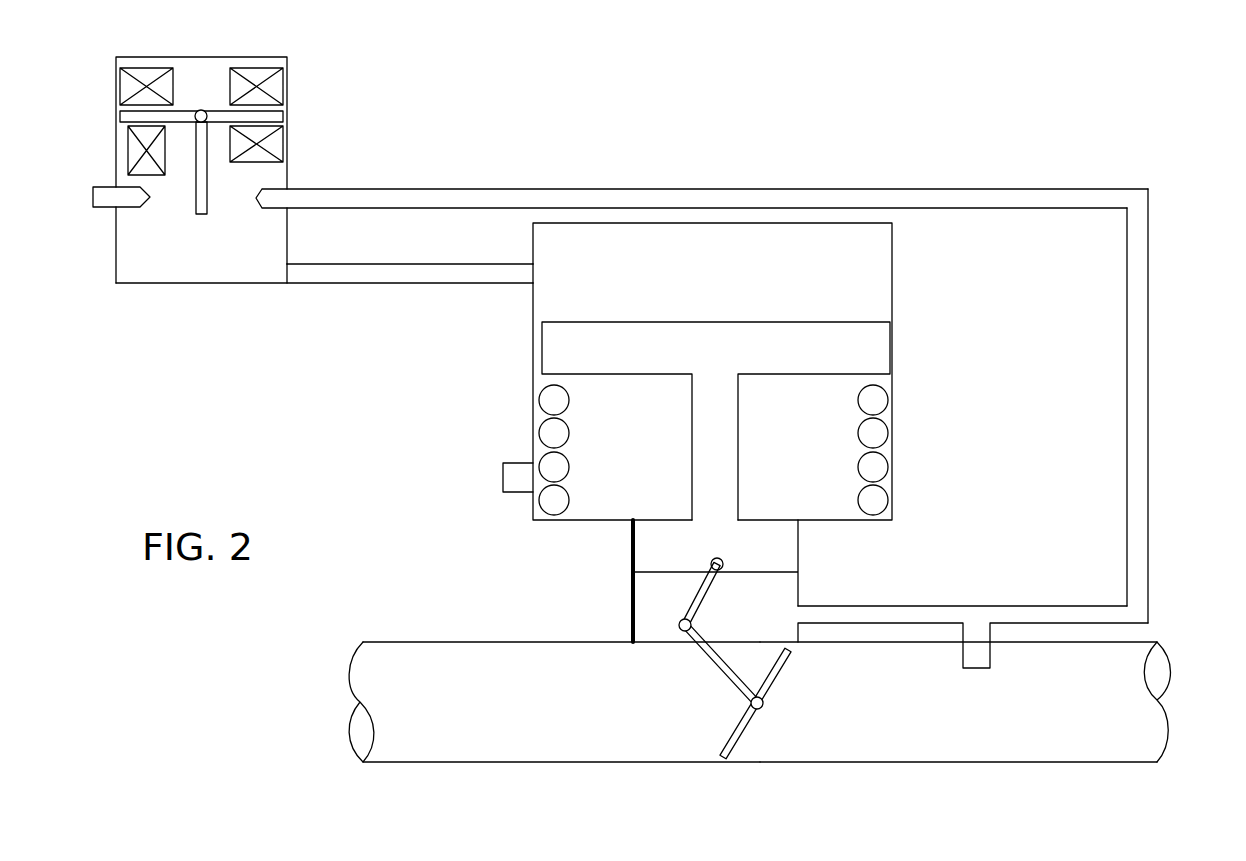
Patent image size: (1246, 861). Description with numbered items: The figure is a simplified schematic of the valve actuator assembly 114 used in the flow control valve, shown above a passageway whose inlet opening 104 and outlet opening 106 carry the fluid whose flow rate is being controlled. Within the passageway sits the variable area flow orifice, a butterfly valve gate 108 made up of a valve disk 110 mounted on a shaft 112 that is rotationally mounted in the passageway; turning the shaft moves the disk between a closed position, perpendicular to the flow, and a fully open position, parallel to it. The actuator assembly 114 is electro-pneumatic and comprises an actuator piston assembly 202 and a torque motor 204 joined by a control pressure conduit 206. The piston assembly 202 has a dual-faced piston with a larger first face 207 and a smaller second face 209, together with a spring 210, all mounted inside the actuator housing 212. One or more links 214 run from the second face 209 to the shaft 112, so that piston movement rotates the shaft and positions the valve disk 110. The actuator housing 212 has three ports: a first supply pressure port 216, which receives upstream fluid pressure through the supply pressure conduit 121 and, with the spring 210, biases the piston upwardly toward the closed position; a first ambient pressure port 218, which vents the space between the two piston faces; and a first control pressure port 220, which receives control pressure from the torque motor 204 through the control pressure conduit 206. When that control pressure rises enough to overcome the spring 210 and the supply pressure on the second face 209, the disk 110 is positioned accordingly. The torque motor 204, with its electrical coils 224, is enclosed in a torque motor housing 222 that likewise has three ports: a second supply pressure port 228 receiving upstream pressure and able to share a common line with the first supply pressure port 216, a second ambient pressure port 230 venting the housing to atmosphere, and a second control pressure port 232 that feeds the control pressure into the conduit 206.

The inlet opening 104 is at (1170, 665).
The outlet opening 106 is at (348, 667).
The butterfly valve gate 108 is at (724, 772).
The valve disk 110 is at (785, 667).
The shaft 112 is at (753, 703).
The valve actuator assembly 114 is at (820, 155).
The supply pressure conduit 121 is at (1137, 400).
The actuator piston assembly 202 is at (497, 479).
The torque motor 204 is at (332, 91).
The control pressure conduit 206 is at (383, 275).
The first face 207 is at (660, 322).
The second face 209 is at (735, 573).
The spring 210 is at (880, 433).
The actuator housing 212 is at (890, 277).
The links 214 is at (695, 642).
The first supply pressure port 216 is at (820, 615).
The first ambient pressure port 218 is at (532, 462).
The first control pressure port 220 is at (525, 282).
The torque motor housing 222 is at (114, 138).
The electrical coils 224 is at (248, 73).
The second supply pressure port 228 is at (297, 195).
The second ambient pressure port 230 is at (107, 200).
The second control pressure port 232 is at (293, 282).